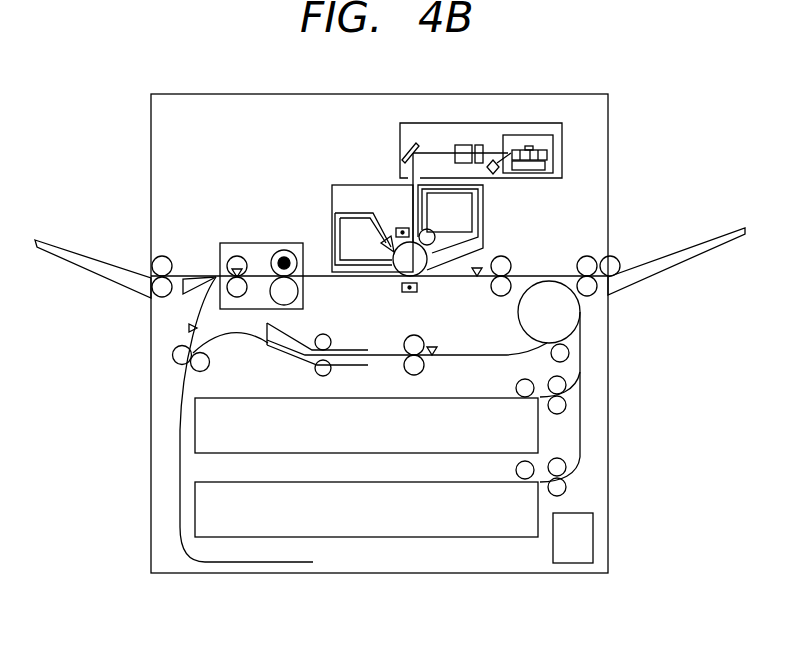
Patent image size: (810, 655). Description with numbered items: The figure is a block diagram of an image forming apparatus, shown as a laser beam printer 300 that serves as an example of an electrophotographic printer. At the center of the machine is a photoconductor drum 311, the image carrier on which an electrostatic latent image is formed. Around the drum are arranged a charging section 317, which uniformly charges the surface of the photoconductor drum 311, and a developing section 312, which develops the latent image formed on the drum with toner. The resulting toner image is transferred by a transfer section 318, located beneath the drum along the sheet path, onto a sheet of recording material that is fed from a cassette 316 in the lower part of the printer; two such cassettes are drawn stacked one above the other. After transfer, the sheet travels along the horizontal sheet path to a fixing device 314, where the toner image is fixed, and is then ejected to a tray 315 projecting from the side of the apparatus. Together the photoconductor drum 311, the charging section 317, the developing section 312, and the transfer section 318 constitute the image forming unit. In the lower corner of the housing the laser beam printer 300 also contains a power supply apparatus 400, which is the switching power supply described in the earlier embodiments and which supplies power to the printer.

The laser beam printer 300 is at (535, 92).
The photoconductor drum 311 is at (415, 260).
The developing section 312 is at (428, 238).
The fixing device 314 is at (263, 243).
The tray 315 is at (85, 260).
The cassette 316 is at (523, 522).
The charging section 317 is at (404, 228).
The transfer section 318 is at (417, 287).
The power supply apparatus 400 is at (552, 547).